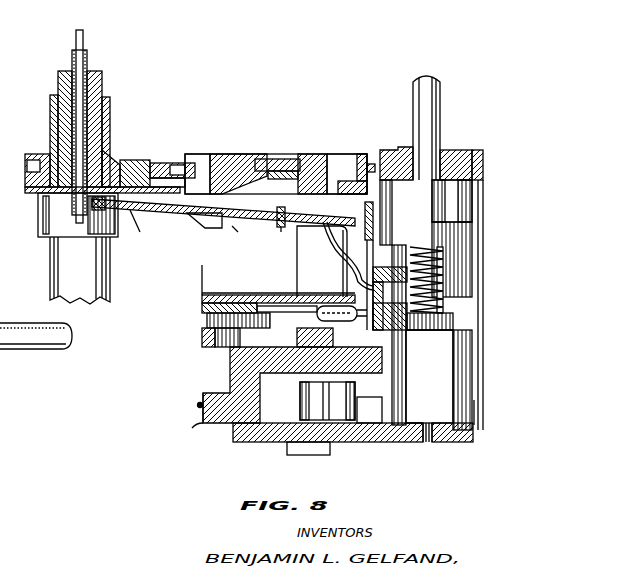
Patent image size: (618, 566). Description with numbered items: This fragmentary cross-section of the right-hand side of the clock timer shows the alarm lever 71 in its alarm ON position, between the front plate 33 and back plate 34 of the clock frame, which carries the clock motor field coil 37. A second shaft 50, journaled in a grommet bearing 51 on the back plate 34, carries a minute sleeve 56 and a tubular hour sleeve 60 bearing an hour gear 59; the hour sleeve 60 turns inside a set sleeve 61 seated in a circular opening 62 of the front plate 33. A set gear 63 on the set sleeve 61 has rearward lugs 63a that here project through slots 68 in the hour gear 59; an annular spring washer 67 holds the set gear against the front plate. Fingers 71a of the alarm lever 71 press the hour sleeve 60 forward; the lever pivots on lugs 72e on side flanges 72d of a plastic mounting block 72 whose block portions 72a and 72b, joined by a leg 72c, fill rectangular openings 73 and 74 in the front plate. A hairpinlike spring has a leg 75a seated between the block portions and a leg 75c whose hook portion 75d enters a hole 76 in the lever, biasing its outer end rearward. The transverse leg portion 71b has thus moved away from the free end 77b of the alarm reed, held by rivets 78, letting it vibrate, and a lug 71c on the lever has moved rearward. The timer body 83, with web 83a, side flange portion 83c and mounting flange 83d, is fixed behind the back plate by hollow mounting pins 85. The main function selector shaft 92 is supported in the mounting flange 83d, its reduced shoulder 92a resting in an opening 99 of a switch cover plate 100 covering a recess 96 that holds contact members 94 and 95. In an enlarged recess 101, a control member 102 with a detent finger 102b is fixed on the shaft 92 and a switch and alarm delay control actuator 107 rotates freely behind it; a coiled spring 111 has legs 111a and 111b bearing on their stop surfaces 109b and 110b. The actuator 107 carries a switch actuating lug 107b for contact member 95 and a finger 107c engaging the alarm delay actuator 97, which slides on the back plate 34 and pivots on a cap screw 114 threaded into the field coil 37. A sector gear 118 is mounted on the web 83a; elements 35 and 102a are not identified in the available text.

The front plate 33 is at (28, 160).
The back plate 34 is at (202, 300).
The cylinder 35 is at (42, 237).
The clock motor field coil 37 is at (208, 270).
The second shaft 50 is at (83, 33).
The grommet bearing 51 is at (156, 17).
The minute sleeve 56 is at (87, 58).
The hour gear 59 is at (40, 190).
The hour sleeve 60 is at (102, 80).
The set sleeve 61 is at (110, 104).
The circular opening 62 is at (50, 158).
The set gear 63 is at (138, 163).
The lugs 63a is at (138, 232).
The annular spring washer 67 is at (116, 160).
The slots 68 is at (128, 210).
The alarm lever 71 is at (237, 295).
The fingers 71a is at (60, 205).
The transverse leg portion 71b is at (309, 290).
The lug 71c is at (348, 258).
The mounting block 72 is at (322, 154).
The block portion 72a is at (214, 154).
The block portion 72b is at (305, 154).
The leg 72c is at (265, 159).
The side flanges 72d is at (238, 232).
The lugs 72e is at (214, 250).
The rectangular opening 73 is at (232, 155).
The rectangular opening 74 is at (352, 168).
The elongated leg 75a is at (286, 165).
The leg portion 75c is at (295, 198).
The hook portion 75d is at (280, 232).
The hole 76 is at (252, 218).
The free end of alarm reed 77b is at (369, 202).
The rivets 78 is at (0, 455).
The body member 83 is at (200, 418).
The web 83a is at (198, 408).
The flange portion 83c is at (507, 336).
The mounting flange 83d is at (483, 160).
The mounting pins 85 is at (88, 297).
The main function selector shaft 92 is at (425, 76).
The reduced diameter shoulder 92a is at (428, 442).
The contact member 94 is at (280, 430).
The contact member 95 is at (340, 424).
The recess 96 is at (258, 442).
The alarm delay actuator 97 is at (203, 316).
The opening 99 is at (422, 442).
The switch cover plate 100 is at (205, 432).
The enlarged recess 101 is at (472, 410).
The control member 102 is at (468, 215).
The guide cap left 102a is at (418, 213).
The detent finger 102b is at (479, 143).
The switch and alarm delay control actuator 107 is at (476, 385).
The switch actuating lug 107b is at (374, 442).
The finger 107c is at (440, 386).
The stop surface 109b is at (440, 282).
The stop surface 110b is at (440, 297).
The coiled biasing spring 111 is at (440, 247).
The spring leg 111a is at (438, 264).
The spring leg 111b is at (455, 363).
The cap screw 114 is at (210, 370).
The sector gear 118 is at (208, 332).